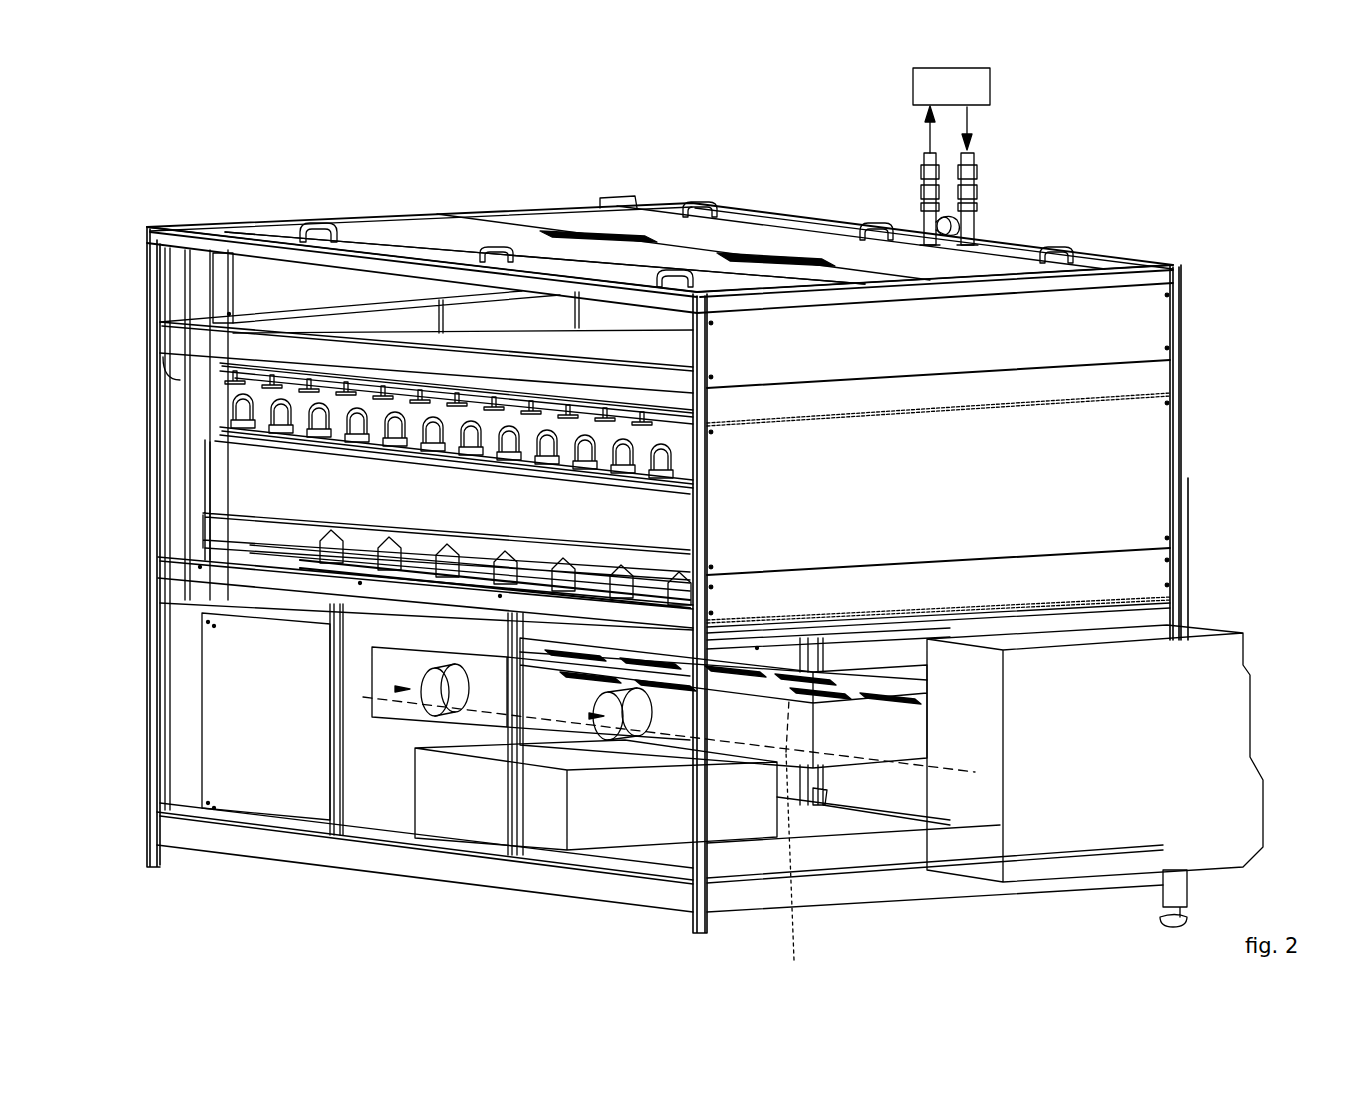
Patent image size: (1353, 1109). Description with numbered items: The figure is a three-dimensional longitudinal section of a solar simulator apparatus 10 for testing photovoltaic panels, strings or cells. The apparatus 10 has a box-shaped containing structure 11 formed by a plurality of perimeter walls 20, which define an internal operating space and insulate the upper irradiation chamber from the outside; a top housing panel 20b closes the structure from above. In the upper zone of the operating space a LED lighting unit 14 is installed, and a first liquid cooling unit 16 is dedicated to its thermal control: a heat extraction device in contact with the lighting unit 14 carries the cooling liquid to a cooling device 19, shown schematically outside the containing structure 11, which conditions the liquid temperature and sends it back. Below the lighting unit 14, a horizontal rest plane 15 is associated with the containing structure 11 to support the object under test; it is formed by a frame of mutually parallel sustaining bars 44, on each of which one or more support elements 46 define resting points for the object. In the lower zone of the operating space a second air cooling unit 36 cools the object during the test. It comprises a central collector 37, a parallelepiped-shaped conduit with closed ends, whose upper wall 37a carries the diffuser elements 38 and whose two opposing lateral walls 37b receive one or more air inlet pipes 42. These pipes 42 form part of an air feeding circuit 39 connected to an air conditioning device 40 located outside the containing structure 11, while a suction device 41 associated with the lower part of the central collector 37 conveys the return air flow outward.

The solar simulator apparatus 10 is at (675, 539).
The containing structure 11 is at (1167, 200).
The LED lighting unit 14 is at (268, 451).
The horizontal rest plane 15 is at (302, 545).
The first liquid cooling unit 16 is at (213, 418).
The cooling device 19 is at (922, 88).
The perimeter walls 20 is at (524, 208).
The top housing panel 20b is at (578, 214).
The second air cooling unit 36 is at (857, 814).
The central collector 37 is at (758, 767).
The upper wall 37a is at (465, 633).
The lateral walls 37b is at (492, 700).
The diffuser elements 38 is at (882, 692).
The air feeding circuit 39 is at (785, 846).
The air conditioning device 40 is at (1102, 852).
The suction device 41 is at (540, 828).
The air inlet pipes 42 is at (453, 708).
The sustaining bars 44 is at (262, 567).
The support elements 46 is at (686, 582).